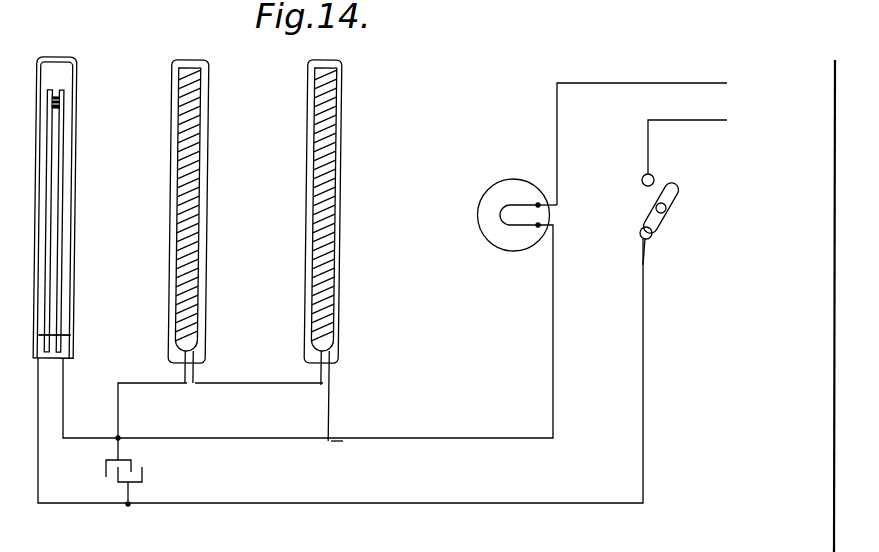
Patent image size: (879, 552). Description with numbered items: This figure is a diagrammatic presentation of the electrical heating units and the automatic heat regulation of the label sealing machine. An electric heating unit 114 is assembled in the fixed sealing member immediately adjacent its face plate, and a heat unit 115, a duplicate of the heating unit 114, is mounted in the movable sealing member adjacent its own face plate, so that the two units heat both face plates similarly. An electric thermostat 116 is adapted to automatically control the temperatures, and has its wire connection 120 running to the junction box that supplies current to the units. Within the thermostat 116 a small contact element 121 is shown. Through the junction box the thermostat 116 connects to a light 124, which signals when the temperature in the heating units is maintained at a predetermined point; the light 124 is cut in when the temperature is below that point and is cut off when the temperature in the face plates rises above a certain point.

The electric heating unit 114 is at (203, 228).
The heat unit 115 is at (338, 232).
The electric thermostat 116 is at (74, 336).
The wire connection 120 is at (47, 198).
The contact element 121 is at (56, 104).
The light 124 is at (506, 186).